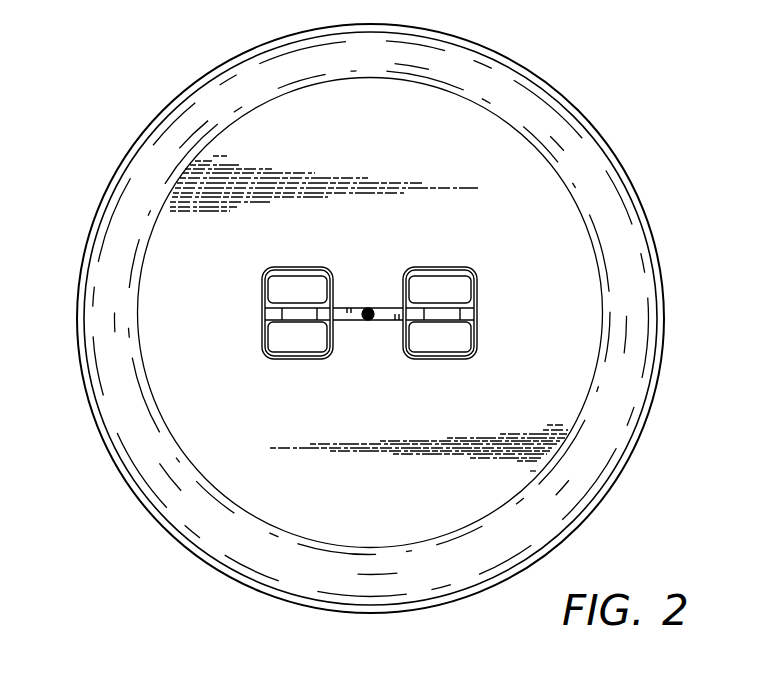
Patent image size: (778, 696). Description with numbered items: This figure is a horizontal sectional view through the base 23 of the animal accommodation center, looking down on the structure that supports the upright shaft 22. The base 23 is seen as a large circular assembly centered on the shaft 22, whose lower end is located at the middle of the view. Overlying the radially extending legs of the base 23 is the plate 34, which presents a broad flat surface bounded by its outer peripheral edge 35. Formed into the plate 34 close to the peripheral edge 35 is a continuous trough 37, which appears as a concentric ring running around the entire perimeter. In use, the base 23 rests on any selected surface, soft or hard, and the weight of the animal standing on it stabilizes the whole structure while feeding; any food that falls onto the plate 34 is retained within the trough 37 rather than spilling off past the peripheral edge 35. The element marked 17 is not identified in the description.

The base 23 is at (120, 475).
The outer peripheral edge 35 is at (612, 156).
The continuous trough 37 is at (150, 182).
The plate 34 is at (512, 219).
The handle 17 is at (433, 360).
The shaft 22 is at (369, 308).